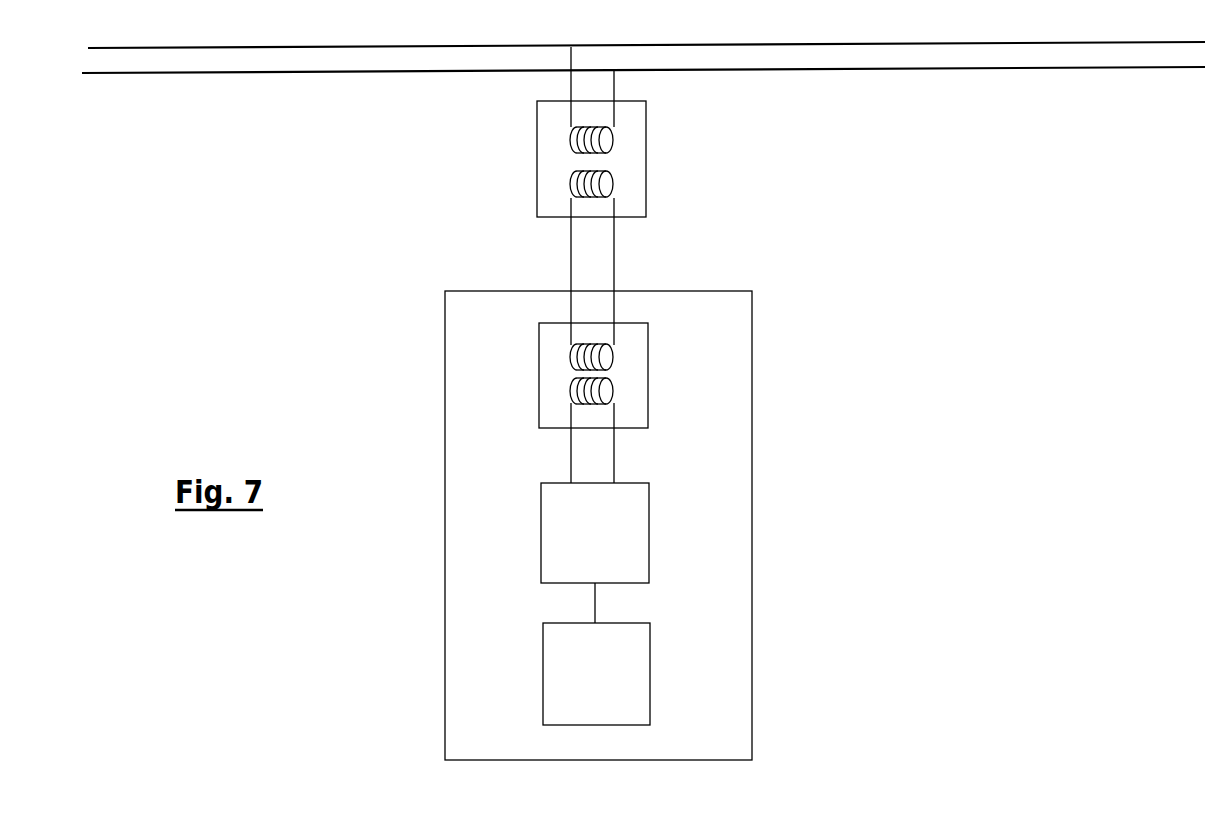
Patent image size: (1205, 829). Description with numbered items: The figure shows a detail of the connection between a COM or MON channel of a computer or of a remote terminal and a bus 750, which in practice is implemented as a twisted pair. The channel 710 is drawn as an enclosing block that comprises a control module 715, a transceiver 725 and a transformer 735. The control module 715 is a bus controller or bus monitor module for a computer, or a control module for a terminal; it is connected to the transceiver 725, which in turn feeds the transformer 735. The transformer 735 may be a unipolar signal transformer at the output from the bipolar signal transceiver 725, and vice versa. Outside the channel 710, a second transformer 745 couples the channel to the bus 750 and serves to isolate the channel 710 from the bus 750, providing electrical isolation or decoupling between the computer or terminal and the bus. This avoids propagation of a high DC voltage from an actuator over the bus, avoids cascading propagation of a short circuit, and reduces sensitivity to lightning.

The bus 750 is at (76, 40).
The second transformer 745 is at (648, 197).
The transformer 735 is at (648, 372).
The channel 710 is at (752, 512).
The transceiver 725 is at (595, 533).
The control module 715 is at (596, 674).